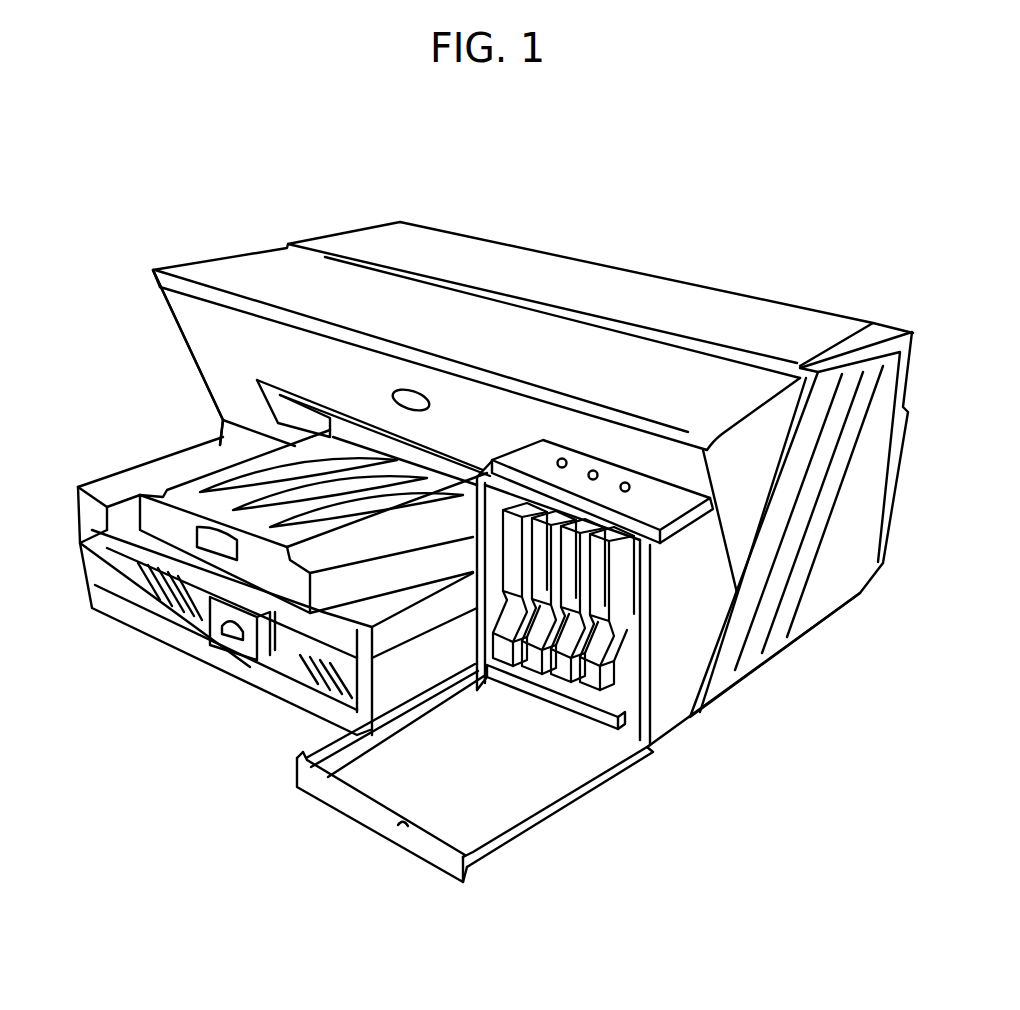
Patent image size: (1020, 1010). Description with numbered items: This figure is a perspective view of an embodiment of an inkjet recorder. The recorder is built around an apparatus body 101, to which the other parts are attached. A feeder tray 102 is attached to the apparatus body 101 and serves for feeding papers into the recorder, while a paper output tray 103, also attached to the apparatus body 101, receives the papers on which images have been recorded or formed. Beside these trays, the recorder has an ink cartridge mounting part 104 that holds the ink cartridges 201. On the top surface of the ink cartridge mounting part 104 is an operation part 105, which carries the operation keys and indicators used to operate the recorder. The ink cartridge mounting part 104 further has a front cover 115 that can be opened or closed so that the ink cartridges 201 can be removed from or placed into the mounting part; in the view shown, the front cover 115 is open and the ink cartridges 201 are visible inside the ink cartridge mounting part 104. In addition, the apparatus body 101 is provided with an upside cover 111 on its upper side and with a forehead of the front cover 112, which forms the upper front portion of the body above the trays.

The apparatus body 101 is at (687, 228).
The upside cover 111 is at (471, 248).
The forehead of the front cover 112 is at (195, 336).
The paper output tray 103 is at (157, 515).
The feeder tray 102 is at (283, 692).
The operation part 105 is at (672, 500).
The ink cartridge mounting part 104 is at (673, 697).
The ink cartridges 201 is at (627, 660).
The front cover 115 is at (330, 795).